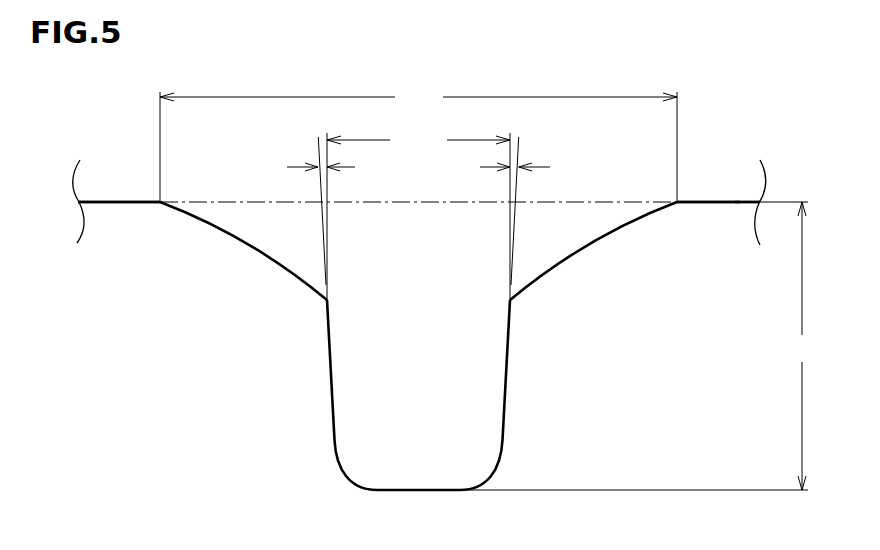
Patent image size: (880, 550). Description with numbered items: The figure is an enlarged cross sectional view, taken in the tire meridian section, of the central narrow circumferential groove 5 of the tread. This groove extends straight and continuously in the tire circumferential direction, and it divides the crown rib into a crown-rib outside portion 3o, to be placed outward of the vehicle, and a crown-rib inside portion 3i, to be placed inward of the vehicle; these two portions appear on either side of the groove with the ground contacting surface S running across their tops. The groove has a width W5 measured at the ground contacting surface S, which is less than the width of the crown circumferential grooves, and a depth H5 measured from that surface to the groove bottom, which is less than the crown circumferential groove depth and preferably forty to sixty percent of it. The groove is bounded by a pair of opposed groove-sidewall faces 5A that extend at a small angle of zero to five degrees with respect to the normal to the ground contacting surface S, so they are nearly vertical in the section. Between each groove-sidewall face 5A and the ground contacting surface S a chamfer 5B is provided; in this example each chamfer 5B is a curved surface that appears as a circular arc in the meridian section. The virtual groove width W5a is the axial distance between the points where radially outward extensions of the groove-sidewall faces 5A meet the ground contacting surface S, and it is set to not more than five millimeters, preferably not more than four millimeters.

The central narrow circumferential groove 5 is at (419, 346).
The groove-sidewall faces 5A is at (329, 366).
The chamfer 5B is at (276, 256).
The crown-rib outside portion 3o is at (120, 200).
The crown-rib inside portion 3i is at (703, 201).
The ground contacting surface S is at (742, 201).
The width of the central narrow circumferential groove W5 is at (418, 143).
The virtual groove width W5a is at (418, 215).
The depth of the central narrow circumferential groove H5 is at (639, 346).